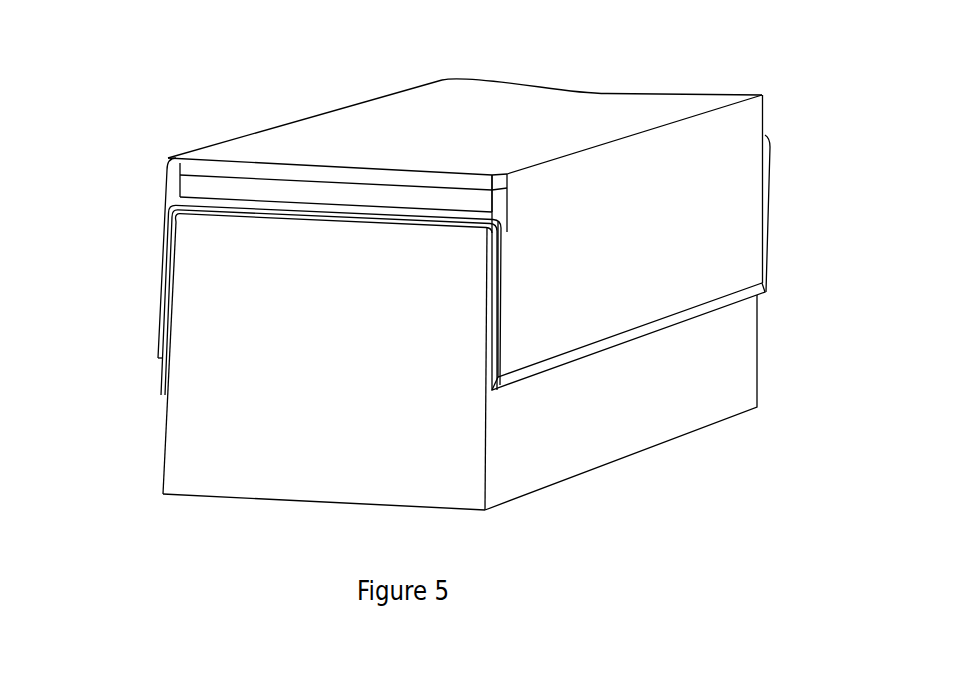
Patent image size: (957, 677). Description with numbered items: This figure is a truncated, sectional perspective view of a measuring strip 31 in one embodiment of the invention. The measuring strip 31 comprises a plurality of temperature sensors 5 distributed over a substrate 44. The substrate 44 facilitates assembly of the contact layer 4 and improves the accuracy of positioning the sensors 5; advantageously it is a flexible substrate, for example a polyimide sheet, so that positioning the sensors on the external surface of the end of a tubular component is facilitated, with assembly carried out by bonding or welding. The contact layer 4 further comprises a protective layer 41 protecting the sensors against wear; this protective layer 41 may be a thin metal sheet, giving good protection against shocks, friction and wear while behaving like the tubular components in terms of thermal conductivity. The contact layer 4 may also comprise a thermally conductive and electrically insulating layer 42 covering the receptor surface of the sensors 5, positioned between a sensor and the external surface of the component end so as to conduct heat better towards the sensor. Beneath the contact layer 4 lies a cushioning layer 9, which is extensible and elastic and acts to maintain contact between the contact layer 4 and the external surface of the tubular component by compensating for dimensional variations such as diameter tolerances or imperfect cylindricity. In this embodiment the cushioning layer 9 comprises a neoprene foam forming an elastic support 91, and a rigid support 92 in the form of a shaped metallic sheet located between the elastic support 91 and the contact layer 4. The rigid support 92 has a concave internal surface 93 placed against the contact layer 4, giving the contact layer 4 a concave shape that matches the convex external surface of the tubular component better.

The contact layer 4 is at (178, 178).
The temperature sensors 5 is at (242, 182).
The cushioning layer 9 is at (223, 409).
The measuring strip 31 is at (324, 519).
The protective layer 41 is at (757, 112).
The thermally conductive and electrically insulating layer 42 is at (277, 167).
The substrate 44 is at (197, 182).
The elastic support 91 is at (217, 366).
The rigid support 92 is at (247, 200).
The internal surface 93 is at (345, 217).